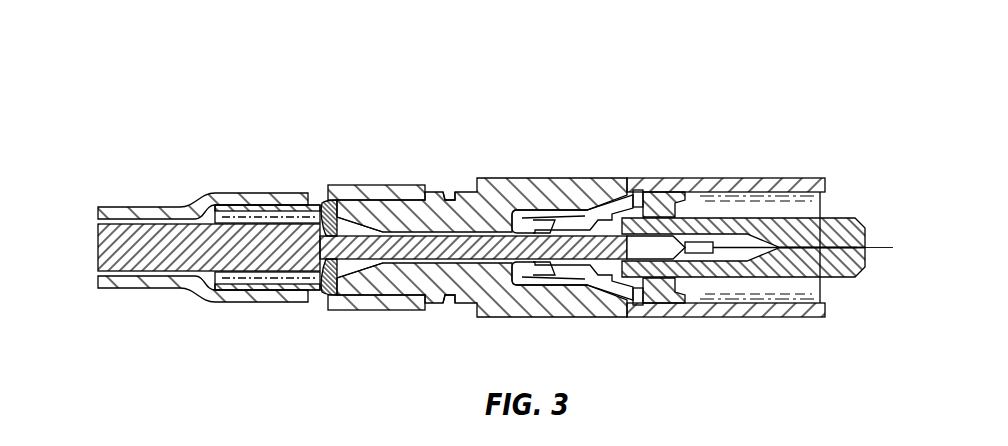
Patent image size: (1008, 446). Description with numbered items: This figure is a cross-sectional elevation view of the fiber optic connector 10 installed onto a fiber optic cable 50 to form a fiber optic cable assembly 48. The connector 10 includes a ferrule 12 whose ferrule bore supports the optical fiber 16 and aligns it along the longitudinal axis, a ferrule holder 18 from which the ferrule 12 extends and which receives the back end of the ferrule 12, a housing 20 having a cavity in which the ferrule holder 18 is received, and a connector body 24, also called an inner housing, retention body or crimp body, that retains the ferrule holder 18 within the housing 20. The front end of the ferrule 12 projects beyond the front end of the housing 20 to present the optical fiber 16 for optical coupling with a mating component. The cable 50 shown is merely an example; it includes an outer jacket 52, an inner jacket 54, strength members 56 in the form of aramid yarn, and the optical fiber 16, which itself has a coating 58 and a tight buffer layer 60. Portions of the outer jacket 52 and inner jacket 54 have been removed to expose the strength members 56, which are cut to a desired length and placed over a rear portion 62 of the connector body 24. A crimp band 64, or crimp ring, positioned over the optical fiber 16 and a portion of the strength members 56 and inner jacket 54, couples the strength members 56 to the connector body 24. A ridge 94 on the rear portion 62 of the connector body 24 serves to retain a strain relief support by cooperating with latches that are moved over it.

The connector 10 is at (584, 211).
The ferrule 12 is at (780, 185).
The optical fiber 16 is at (733, 253).
The ferrule holder 18 is at (590, 268).
The housing 20 is at (657, 178).
The connector body 24 is at (482, 226).
The fiber optic cable assembly 48 is at (170, 156).
The fiber optic cable 50 is at (180, 226).
The outer jacket 52 is at (232, 193).
The inner jacket 54 is at (236, 277).
The strength members 56 is at (313, 290).
The coating 58 is at (693, 279).
The buffer layer 60 is at (482, 265).
The rear portion 62 is at (392, 205).
The crimp band 64 is at (330, 200).
The ridge 94 is at (448, 190).